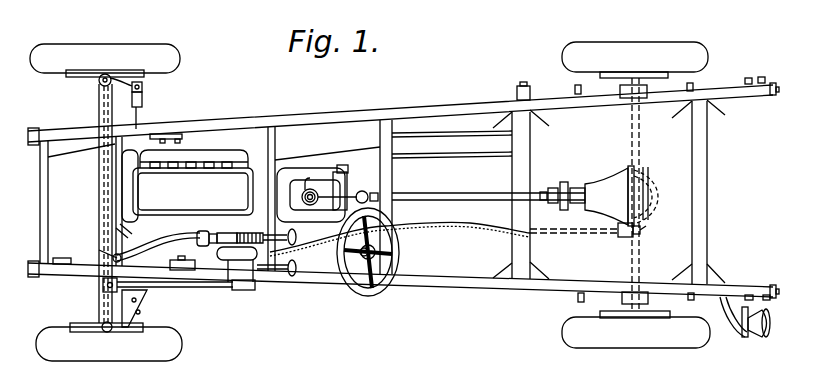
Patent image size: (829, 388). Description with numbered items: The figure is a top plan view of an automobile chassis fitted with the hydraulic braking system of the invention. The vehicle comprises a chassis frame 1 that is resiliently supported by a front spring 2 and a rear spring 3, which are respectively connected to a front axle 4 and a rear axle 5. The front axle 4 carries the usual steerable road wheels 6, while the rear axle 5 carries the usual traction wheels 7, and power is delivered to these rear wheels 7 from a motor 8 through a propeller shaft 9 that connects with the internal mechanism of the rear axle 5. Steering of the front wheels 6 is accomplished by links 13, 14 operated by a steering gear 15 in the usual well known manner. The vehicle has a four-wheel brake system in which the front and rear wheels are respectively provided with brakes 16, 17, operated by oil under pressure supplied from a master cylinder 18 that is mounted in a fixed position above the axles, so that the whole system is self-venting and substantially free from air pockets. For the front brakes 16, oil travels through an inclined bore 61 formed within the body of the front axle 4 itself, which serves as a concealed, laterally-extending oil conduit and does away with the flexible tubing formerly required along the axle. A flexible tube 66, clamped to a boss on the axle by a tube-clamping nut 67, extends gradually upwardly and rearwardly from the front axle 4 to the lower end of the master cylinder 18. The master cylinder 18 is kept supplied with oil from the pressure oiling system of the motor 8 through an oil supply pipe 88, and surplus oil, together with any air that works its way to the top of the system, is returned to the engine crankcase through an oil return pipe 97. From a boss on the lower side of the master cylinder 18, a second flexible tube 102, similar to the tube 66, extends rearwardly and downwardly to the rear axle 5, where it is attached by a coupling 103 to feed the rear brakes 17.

The chassis frame 1 is at (406, 108).
The front spring 2 is at (181, 134).
The rear spring 3 is at (548, 93).
The front axle 4 is at (103, 155).
The rear axle 5 is at (641, 131).
The steerable road wheels 6 is at (173, 57).
The traction wheels 7 is at (696, 48).
The motor 8 is at (145, 191).
The propeller shaft 9 is at (433, 197).
The link 13 is at (117, 232).
The link 14 is at (187, 287).
The steering gear 15 is at (232, 262).
The front wheel brakes 16 is at (140, 73).
The rear wheel brakes 17 is at (672, 73).
The master cylinder 18 is at (220, 236).
The inclined bore 61 is at (103, 183).
The flexible tube 66 is at (133, 230).
The tube-clamping nut 67 is at (110, 252).
The oil supply pipe 88 is at (232, 232).
The oil return pipe 97 is at (187, 228).
The flexible tube 102 is at (457, 227).
The coupling 103 is at (620, 237).